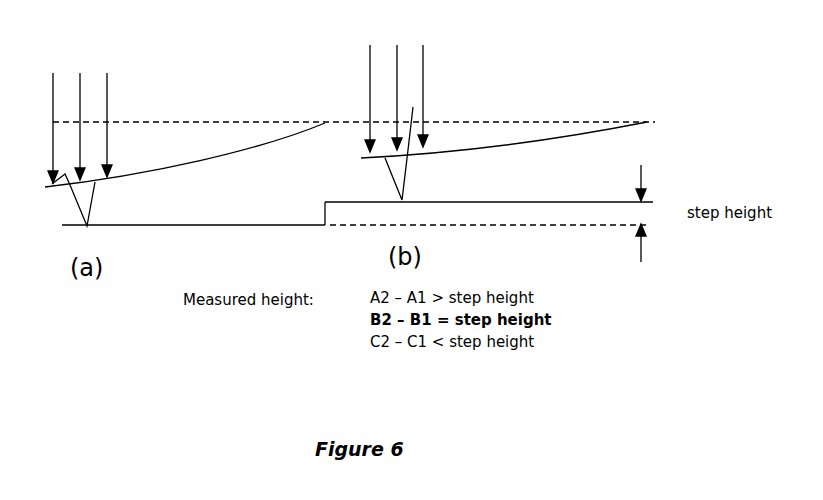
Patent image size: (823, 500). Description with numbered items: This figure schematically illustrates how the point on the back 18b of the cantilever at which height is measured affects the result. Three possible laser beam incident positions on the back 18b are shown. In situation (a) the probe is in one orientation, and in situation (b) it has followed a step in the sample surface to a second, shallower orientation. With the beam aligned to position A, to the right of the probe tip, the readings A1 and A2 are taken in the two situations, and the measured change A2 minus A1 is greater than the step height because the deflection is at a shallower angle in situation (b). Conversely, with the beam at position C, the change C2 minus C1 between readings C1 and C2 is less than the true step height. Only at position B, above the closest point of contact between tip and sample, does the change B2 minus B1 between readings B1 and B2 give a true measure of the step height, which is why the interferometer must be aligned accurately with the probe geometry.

The back of the cantilever 18b is at (52, 184).
The measured height at position A in situation (a) A1 is at (53, 114).
The measured height at position B in situation (a) B1 is at (81, 113).
The measured height at position C in situation (a) C1 is at (108, 111).
The measured height at position A in situation (b) A2 is at (367, 89).
The measured height at position B in situation (b) B2 is at (396, 88).
The measured height at position C in situation (b) C2 is at (424, 86).